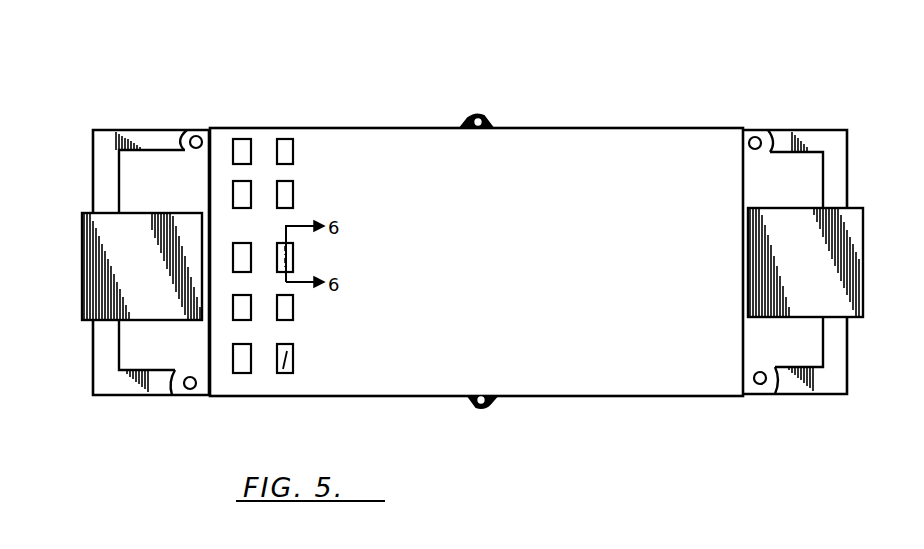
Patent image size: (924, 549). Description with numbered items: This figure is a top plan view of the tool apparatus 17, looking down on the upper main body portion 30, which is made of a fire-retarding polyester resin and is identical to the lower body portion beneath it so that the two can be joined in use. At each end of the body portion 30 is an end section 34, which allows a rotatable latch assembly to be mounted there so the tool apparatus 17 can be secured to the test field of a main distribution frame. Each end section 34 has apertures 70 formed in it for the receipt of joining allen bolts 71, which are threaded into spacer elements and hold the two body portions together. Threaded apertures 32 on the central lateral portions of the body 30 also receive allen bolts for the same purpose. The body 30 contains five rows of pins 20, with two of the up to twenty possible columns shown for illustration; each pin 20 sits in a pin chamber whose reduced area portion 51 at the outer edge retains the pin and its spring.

The tool apparatus 17 is at (541, 56).
The pin 20 is at (242, 145).
The upper main body portion 30 is at (573, 263).
The threaded apertures 32 is at (470, 118).
The end section 34 is at (110, 131).
The reduced area portion 51 is at (252, 147).
The aperture 70 is at (197, 150).
The allen bolt 71 is at (193, 150).